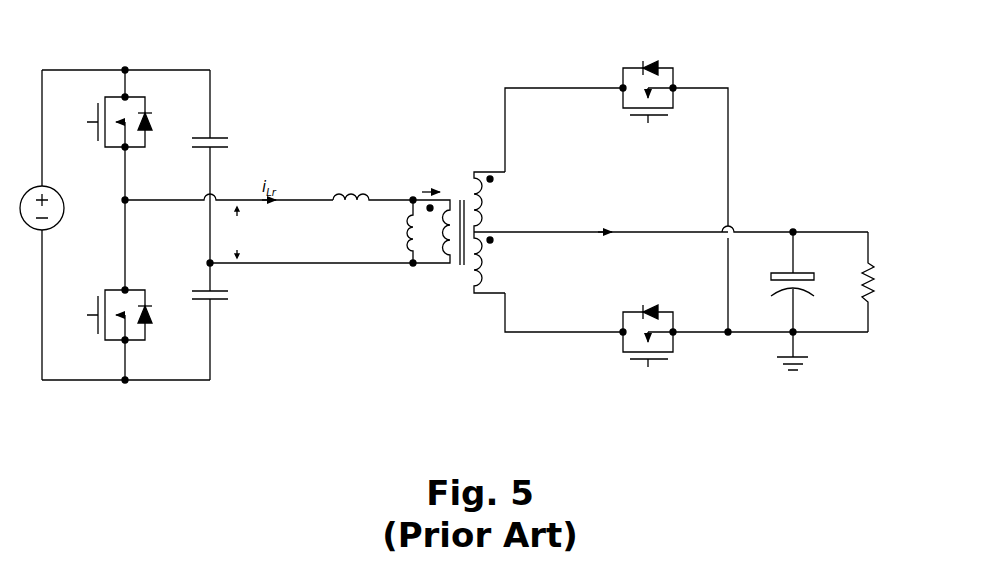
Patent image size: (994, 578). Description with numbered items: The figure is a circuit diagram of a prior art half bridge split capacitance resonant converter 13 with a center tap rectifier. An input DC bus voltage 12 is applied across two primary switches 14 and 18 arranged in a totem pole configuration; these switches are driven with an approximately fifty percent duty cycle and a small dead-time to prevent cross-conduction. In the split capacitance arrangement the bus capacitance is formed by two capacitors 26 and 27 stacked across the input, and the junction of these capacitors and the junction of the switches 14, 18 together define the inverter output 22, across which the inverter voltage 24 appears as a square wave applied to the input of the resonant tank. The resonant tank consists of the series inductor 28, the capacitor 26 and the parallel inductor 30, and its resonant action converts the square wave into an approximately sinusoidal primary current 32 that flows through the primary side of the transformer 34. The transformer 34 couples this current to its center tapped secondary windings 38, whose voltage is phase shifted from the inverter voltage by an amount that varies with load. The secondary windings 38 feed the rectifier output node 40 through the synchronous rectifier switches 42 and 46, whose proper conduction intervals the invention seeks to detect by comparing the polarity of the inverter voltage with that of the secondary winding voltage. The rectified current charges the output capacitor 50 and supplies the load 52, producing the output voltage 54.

The input DC bus voltage 12 is at (55, 208).
The resonant converter 13 is at (400, 52).
The primary switch 14 is at (119, 113).
The primary switch 18 is at (119, 306).
The resonant tank 22 is at (287, 160).
The inverter output voltage 24 is at (272, 259).
The capacitor 26 is at (197, 144).
The lower input capacitor 27 is at (197, 297).
The series inductor 28 is at (373, 185).
The parallel inductor 30 is at (396, 231).
The sinusoidal current 32 is at (434, 152).
The transformer 34 is at (455, 285).
The transformer secondary windings 38 is at (548, 279).
The rectifier output node 40 is at (608, 218).
The rectifier switch 42 is at (634, 92).
The rectifier switch 46 is at (634, 336).
The output capacitor 50 is at (787, 299).
The load resistor 52 is at (853, 282).
The output voltage 54 is at (906, 258).